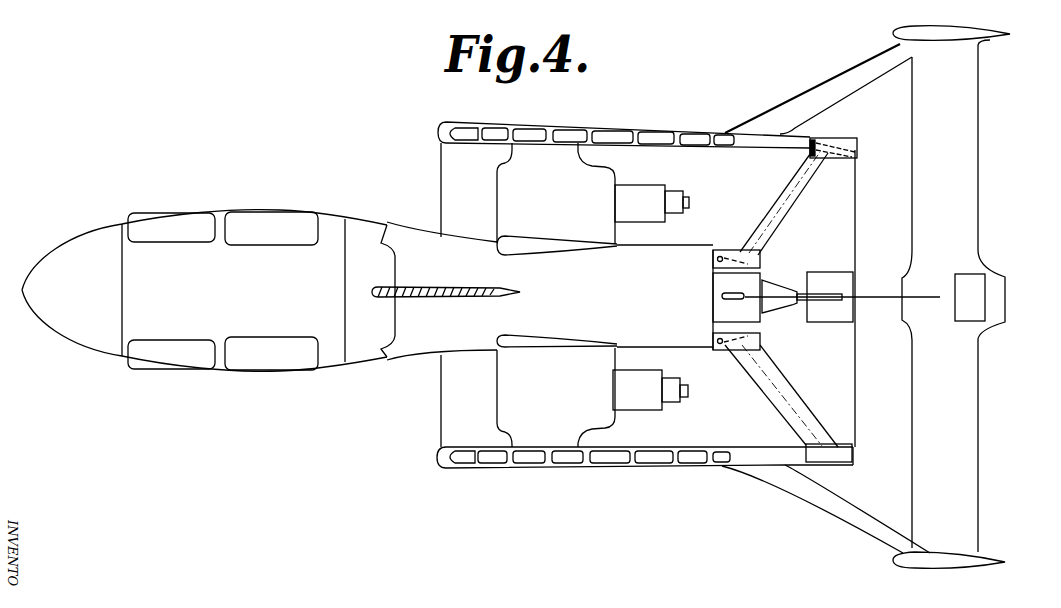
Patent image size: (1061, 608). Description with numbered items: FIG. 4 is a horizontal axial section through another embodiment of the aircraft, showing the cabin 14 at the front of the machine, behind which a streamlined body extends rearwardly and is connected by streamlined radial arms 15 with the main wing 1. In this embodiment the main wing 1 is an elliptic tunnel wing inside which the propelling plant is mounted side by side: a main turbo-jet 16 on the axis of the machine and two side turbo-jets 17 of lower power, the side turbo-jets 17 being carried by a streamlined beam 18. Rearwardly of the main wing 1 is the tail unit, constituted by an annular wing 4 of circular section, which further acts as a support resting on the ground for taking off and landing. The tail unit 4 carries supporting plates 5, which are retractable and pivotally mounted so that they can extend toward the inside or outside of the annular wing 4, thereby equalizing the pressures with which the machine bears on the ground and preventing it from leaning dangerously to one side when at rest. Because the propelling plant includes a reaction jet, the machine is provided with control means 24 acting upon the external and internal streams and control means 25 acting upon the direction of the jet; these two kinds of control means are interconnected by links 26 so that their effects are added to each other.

The main wing 1 is at (597, 124).
The annular wing 4 is at (930, 433).
The supporting plates 5 is at (973, 285).
The cabin 14 is at (332, 231).
The streamlined radial arms 15 is at (434, 288).
The main turbo-jet 16 is at (658, 278).
The side turbo-jets 17 is at (582, 197).
The streamlined beam 18 is at (538, 153).
The control means acting upon the external and internal streams 24 is at (840, 138).
The control means acting upon the direction of the jet 25 is at (760, 255).
The links 26 is at (776, 212).